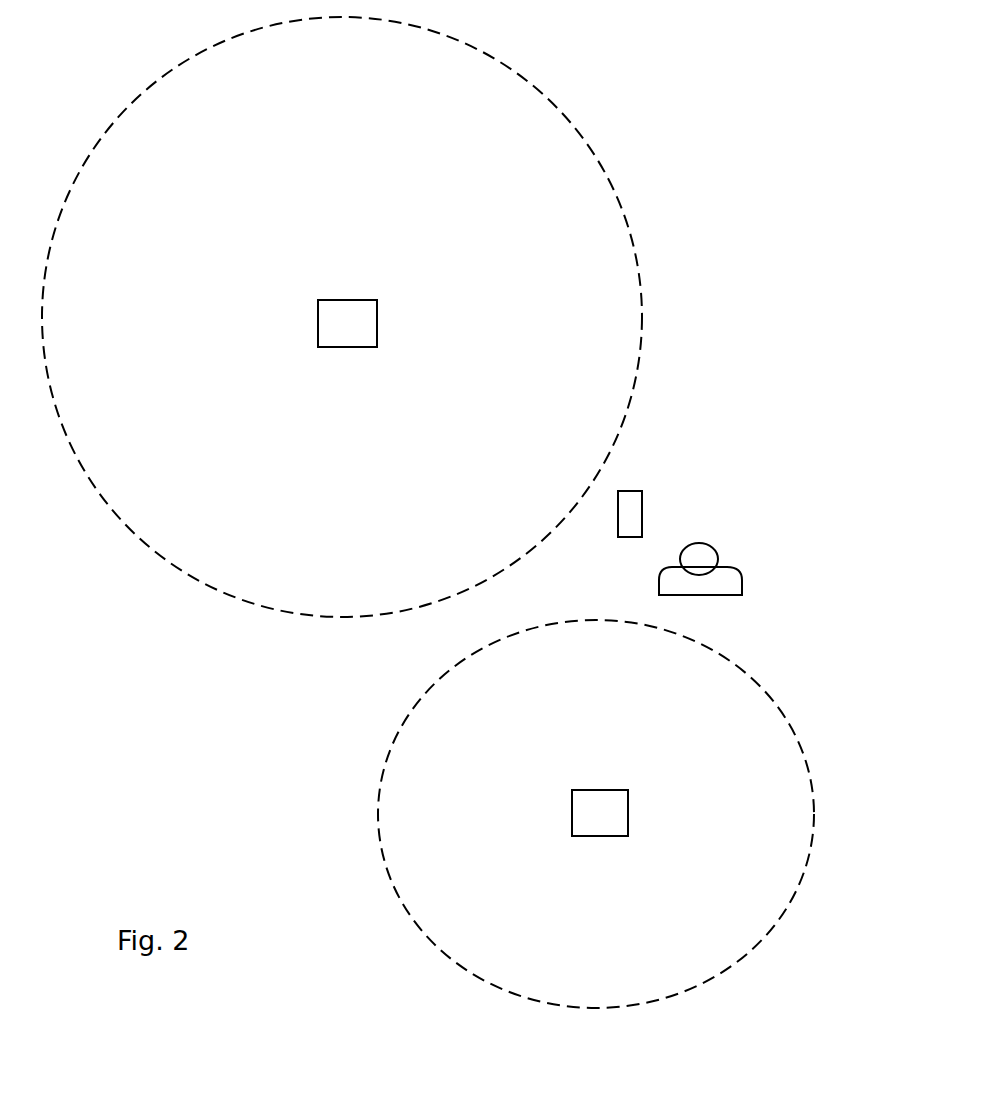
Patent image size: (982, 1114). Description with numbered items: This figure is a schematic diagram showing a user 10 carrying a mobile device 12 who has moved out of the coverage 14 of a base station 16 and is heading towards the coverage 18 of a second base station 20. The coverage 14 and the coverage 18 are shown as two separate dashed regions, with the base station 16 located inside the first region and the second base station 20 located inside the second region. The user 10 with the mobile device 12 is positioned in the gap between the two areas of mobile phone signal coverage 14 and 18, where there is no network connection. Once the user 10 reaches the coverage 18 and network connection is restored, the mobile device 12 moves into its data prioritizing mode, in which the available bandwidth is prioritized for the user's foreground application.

The user 10 is at (744, 582).
The mobile device 12 is at (642, 505).
The coverage 14 is at (547, 100).
The base station 16 is at (318, 323).
The coverage 18 is at (427, 942).
The second base station 20 is at (570, 812).